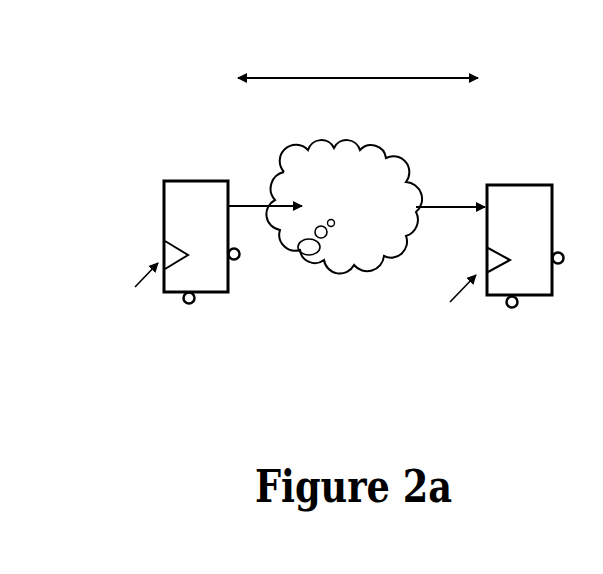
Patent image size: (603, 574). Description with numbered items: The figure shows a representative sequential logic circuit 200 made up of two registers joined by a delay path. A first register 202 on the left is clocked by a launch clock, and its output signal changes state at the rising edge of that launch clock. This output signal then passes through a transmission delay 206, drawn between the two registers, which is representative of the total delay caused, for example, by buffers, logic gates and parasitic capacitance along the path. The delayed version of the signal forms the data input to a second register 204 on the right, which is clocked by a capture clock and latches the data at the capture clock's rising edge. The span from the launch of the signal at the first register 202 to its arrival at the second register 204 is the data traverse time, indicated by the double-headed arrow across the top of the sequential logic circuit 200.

The sequential logic circuit 200 is at (130, 70).
The first register 202 is at (200, 180).
The second register 204 is at (527, 183).
The transmission delay 206 is at (375, 195).